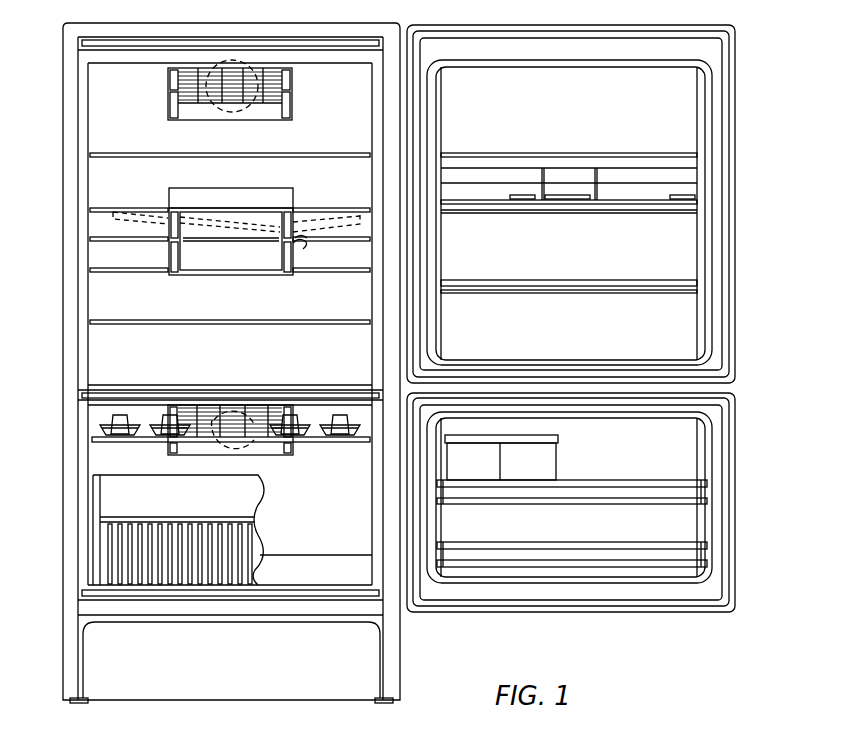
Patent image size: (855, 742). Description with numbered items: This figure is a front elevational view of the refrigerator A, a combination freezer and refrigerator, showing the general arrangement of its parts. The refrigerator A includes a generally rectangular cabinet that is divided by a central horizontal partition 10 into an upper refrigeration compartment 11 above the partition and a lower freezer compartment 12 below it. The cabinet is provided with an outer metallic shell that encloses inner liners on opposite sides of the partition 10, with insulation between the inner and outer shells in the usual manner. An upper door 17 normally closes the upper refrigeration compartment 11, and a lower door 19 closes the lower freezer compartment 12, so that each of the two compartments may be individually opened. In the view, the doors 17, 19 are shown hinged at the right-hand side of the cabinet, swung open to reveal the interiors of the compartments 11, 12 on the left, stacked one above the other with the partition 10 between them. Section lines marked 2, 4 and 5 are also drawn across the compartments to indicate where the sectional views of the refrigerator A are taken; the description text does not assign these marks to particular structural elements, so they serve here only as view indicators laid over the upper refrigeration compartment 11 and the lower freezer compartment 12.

The section line 2- 2 is at (40, 170).
The section line 4- 4 is at (42, 497).
The section line 5-5 / cooling unit housing 5 is at (195, 172).
The central horizontal partition 10 is at (115, 390).
The upper refrigeration compartment 11 is at (105, 243).
The lower freezer compartment 12 is at (125, 500).
The upper door 17 is at (678, 245).
The lower door 19 is at (685, 520).
The refrigerator A is at (66, 558).